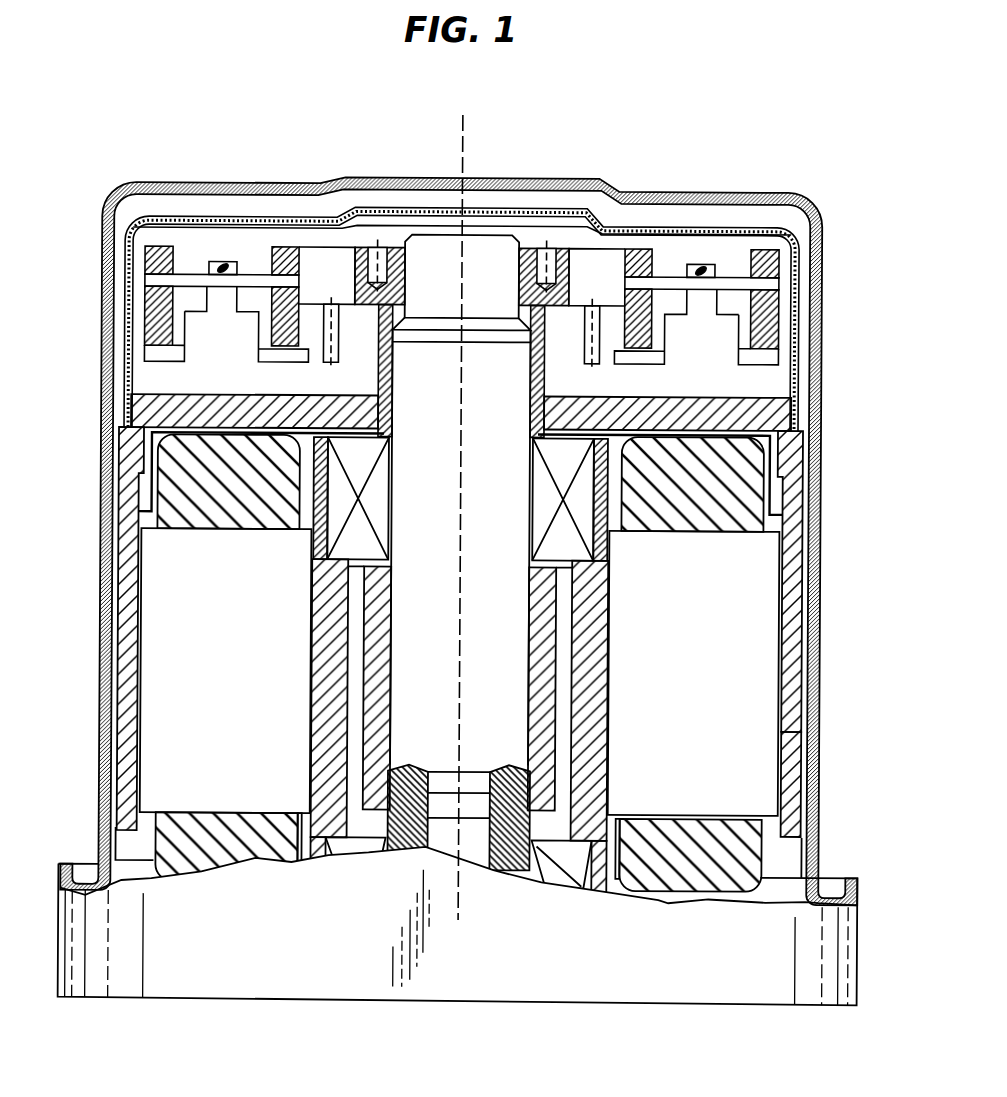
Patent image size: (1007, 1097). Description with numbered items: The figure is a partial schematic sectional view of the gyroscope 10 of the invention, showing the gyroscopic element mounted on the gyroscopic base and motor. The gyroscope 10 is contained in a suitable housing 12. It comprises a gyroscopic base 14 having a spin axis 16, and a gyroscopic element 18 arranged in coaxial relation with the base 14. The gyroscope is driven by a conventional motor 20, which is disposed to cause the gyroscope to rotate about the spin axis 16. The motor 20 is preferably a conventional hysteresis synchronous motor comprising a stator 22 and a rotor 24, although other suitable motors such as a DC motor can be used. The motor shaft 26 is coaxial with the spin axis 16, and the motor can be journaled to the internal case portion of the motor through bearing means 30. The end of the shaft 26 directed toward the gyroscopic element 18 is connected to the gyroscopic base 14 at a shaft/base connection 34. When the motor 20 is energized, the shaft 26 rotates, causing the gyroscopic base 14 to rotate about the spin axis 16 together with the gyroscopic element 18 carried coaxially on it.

The gyroscope 10 is at (643, 84).
The housing 12 is at (821, 256).
The gyroscopic base 14 is at (771, 384).
The spin axis 16 is at (462, 143).
The gyroscopic element 18 is at (760, 258).
The motor 20 is at (800, 690).
The stator 22 is at (767, 596).
The rotor 24 is at (792, 775).
The motor shaft 26 is at (410, 667).
The bearing means 30 is at (560, 867).
The shaft/base connection 34 is at (399, 256).